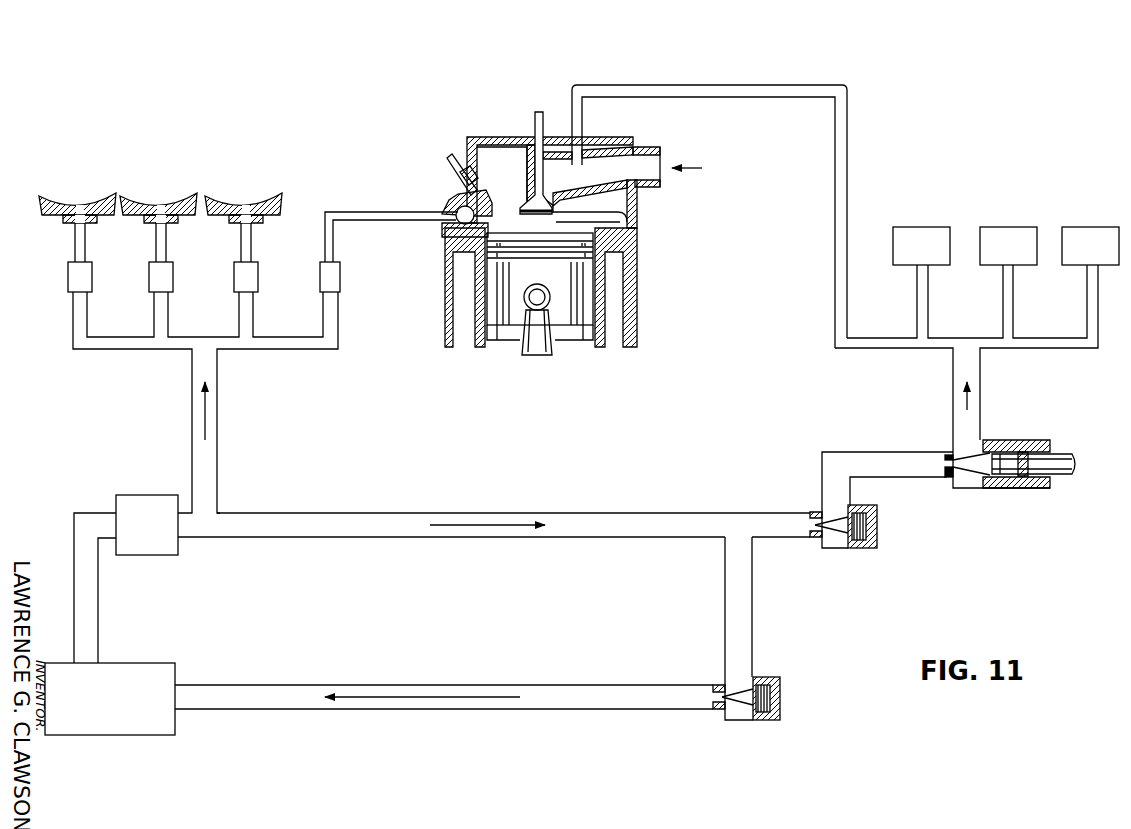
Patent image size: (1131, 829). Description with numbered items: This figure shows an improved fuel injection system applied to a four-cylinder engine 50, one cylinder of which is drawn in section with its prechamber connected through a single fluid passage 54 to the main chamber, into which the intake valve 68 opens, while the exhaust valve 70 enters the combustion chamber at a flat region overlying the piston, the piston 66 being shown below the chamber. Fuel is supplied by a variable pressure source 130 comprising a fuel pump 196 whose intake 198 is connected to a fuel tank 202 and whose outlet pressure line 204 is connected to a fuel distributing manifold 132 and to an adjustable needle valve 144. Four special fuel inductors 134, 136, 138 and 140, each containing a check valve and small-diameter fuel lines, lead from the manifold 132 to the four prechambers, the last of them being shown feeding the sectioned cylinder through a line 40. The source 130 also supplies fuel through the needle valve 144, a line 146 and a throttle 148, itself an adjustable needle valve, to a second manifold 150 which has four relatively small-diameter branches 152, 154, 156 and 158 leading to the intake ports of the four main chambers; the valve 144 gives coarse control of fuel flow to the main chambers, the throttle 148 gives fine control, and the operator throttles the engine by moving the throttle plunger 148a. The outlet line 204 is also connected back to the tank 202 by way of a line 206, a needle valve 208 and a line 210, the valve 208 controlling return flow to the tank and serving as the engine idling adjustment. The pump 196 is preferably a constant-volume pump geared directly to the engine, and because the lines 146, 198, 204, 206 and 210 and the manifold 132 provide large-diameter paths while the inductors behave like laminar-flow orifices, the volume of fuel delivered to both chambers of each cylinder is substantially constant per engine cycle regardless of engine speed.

The engine 50 is at (130, 101).
The fluid passage 54 is at (492, 200).
The piston 66 is at (510, 315).
The intake valve 68 is at (534, 120).
The exhaust valve 70 is at (632, 240).
The fuel line 40 is at (370, 212).
The variable pressure source 130 is at (70, 468).
The fuel distributing manifold 132 is at (180, 369).
The fuel inductor 134 is at (355, 280).
The fuel inductor 136 is at (266, 279).
The fuel inductor 138 is at (191, 279).
The fuel inductor 140 is at (108, 283).
The adjustable needle valve 144 is at (868, 545).
The line 146 is at (875, 455).
The throttle 148 is at (977, 470).
The throttle plunger 148a is at (1066, 473).
The manifold 150 is at (893, 385).
The branch 152 is at (796, 90).
The branch 154 is at (917, 305).
The branch 156 is at (1003, 305).
The branch 158 is at (1087, 305).
The fuel pump 196 is at (165, 545).
The intake 198 is at (96, 594).
The fuel tank 202 is at (168, 678).
The outlet pressure line 204 is at (306, 530).
The line 206 is at (730, 622).
The needle valve 208 is at (780, 707).
The line 210 is at (491, 686).